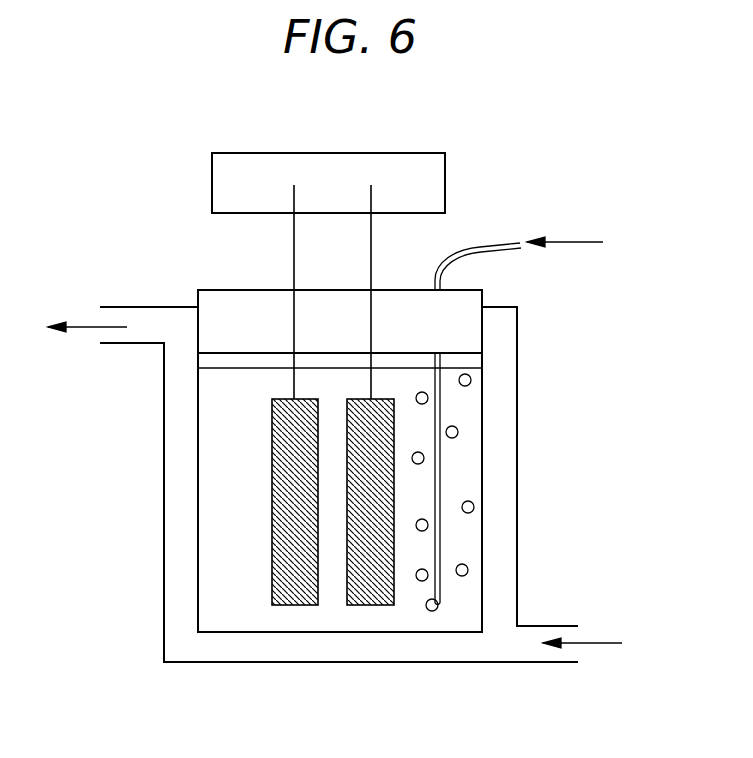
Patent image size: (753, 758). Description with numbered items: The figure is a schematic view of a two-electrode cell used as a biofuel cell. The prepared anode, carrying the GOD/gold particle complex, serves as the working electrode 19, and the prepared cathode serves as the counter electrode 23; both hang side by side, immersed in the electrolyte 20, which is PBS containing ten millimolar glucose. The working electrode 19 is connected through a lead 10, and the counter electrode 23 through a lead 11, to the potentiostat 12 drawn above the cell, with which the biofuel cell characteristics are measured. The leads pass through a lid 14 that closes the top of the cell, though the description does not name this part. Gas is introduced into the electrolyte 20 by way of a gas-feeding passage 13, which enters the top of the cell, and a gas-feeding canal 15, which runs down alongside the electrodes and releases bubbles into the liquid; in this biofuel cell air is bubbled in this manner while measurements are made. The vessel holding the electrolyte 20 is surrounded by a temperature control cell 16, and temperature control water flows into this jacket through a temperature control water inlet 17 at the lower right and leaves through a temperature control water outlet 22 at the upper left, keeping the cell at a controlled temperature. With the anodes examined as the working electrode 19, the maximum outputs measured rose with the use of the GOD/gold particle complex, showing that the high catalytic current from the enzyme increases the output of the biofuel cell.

The lead of the working electrode 10 is at (294, 187).
The lead of the counter electrode 11 is at (371, 187).
The potentiostat 12 is at (415, 184).
The gas-feeding passage 13 is at (520, 242).
The lid 14 is at (473, 337).
The gas-feeding canal 15 is at (440, 477).
The temperature control cell 16 is at (500, 580).
The temperature control water inlet 17 is at (532, 638).
The working electrode 19 is at (295, 605).
The electrolyte 20 is at (228, 605).
The temperature control water outlet 22 is at (150, 322).
The counter electrode 23 is at (370, 605).